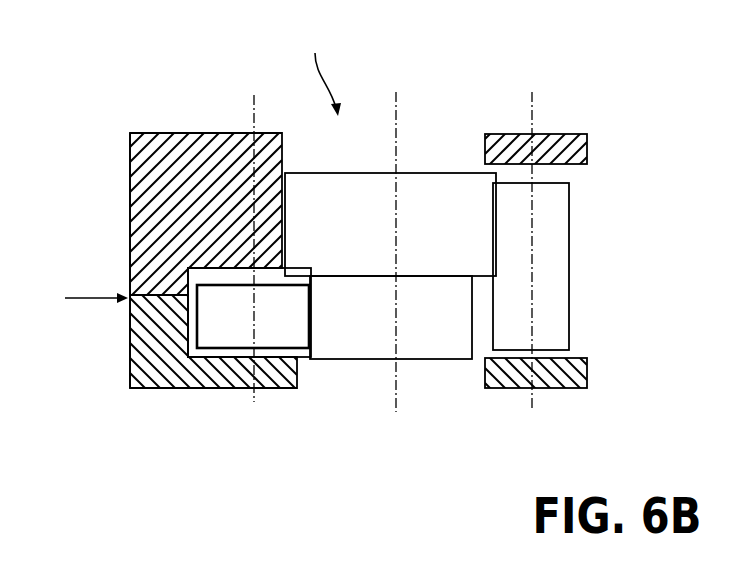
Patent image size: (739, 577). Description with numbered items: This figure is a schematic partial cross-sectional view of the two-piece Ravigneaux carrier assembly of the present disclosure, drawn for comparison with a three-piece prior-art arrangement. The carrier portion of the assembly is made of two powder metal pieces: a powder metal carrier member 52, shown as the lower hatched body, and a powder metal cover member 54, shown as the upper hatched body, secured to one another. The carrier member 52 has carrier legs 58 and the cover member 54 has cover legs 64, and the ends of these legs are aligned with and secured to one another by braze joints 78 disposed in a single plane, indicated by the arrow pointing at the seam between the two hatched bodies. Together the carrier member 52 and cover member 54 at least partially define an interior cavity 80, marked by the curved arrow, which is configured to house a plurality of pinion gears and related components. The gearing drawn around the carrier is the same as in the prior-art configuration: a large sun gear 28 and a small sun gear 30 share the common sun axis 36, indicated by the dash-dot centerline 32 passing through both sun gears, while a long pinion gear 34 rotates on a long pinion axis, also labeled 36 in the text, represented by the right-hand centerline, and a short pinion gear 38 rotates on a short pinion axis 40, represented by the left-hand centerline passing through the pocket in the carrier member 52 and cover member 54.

The large sun gear 28 is at (413, 185).
The small sun gear 30 is at (452, 350).
The central axis 32 is at (396, 98).
The long pinion gear 34 is at (560, 252).
The sun axis 36 is at (532, 98).
The short pinion gear 38 is at (305, 344).
The short pinion axis 40 is at (253, 407).
The powder metal carrier member 52 is at (128, 382).
The powder metal cover member 54 is at (135, 133).
The carrier legs 58 is at (130, 325).
The cover legs 64 is at (130, 280).
The braze joints 78 is at (78, 298).
The interior cavity 80 is at (322, 71).